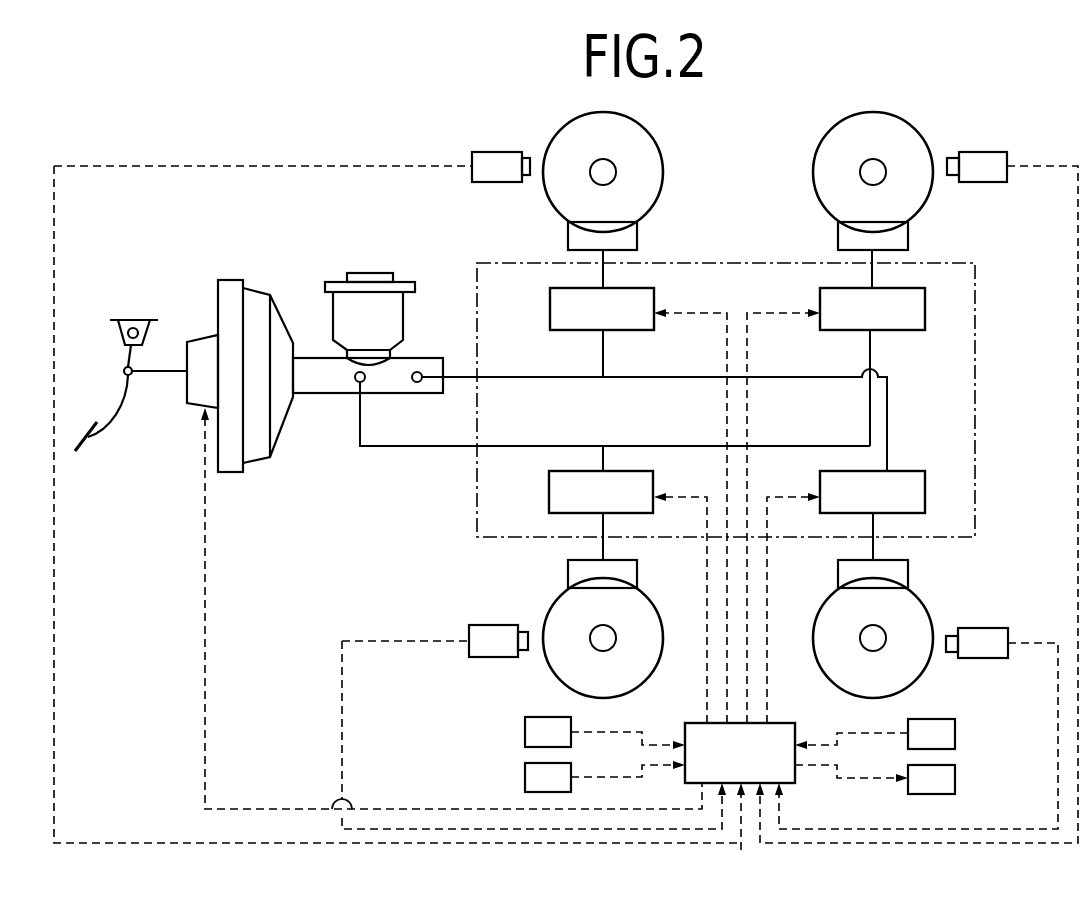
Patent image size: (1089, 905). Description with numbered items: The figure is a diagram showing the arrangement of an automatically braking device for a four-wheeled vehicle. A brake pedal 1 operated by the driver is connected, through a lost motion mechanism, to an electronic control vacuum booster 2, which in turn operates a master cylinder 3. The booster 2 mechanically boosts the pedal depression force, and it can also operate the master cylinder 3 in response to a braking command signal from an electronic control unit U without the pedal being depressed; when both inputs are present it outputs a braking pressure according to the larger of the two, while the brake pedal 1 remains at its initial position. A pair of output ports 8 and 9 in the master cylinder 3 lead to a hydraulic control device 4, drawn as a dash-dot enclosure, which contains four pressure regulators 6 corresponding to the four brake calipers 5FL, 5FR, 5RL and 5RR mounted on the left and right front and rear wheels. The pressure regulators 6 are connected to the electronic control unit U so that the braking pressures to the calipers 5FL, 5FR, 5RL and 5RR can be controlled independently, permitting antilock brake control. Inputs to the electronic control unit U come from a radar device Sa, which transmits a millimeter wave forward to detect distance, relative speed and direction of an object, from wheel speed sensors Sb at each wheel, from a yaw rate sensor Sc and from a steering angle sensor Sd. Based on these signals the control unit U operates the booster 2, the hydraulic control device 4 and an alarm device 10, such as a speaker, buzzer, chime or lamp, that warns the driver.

The brake pedal 1 is at (93, 425).
The electronic control vacuum booster 2 is at (253, 300).
The master cylinder 3 is at (440, 357).
The hydraulic control device 4 is at (988, 361).
The brake caliper 5FR is at (625, 239).
The brake caliper 5RR is at (898, 238).
The brake caliper 5FL is at (620, 572).
The brake caliper 5RL is at (887, 573).
The pressure regulator 6 is at (610, 324).
The output port 8 is at (421, 383).
The output port 9 is at (356, 381).
The alarm device 10 is at (958, 780).
The electronic control unit U is at (750, 765).
The radar device Sa is at (958, 738).
The wheel speed sensor Sb is at (493, 160).
The yaw rate sensor Sc is at (530, 734).
The steering angle sensor Sd is at (532, 782).